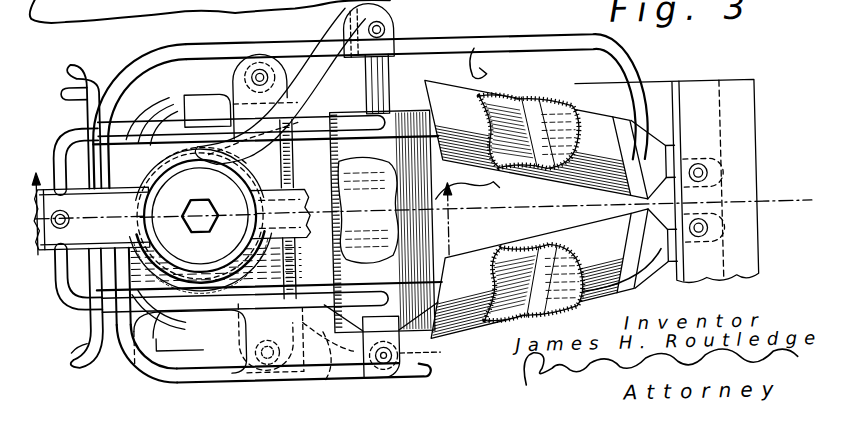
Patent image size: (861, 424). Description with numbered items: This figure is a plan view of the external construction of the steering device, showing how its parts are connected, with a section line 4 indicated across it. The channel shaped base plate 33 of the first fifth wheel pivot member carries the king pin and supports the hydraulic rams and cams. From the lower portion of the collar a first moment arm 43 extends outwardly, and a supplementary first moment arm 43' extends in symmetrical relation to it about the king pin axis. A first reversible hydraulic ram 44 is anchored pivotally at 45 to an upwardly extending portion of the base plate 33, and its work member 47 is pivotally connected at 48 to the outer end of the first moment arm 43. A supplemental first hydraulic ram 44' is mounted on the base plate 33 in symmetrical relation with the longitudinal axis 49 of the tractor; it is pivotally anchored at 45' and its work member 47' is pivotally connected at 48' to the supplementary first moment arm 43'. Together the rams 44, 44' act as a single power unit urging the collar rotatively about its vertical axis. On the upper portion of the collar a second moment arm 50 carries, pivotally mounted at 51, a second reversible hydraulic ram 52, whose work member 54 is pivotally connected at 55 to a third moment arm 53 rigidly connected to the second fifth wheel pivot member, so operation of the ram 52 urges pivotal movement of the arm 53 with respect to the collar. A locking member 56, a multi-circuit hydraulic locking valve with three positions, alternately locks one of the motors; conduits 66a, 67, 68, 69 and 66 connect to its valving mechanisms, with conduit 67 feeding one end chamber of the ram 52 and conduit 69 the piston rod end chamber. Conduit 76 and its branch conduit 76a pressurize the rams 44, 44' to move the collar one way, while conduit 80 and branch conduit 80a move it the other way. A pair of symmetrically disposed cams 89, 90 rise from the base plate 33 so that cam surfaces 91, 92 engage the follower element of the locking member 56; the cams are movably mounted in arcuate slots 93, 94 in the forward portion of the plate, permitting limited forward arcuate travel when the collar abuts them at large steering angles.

The section line 4- 4 is at (248, 219).
The base plate 33 is at (118, 335).
The first moment arm 43 is at (229, 322).
The supplementary first moment arm 43' is at (271, 105).
The first reversible hydraulic ram 44 is at (553, 273).
The supplemental first hydraulic ram 44' is at (550, 139).
The pivot anchor 45 is at (741, 226).
The pivot anchor 45' is at (740, 169).
The work member 47 is at (429, 371).
The work member 47' is at (424, 80).
The pivotal connection 48 is at (266, 359).
The pivotal connection 48' is at (265, 96).
The longitudinal axis 49 is at (780, 210).
The second moment arm 50 is at (364, 380).
The pivot mount 51 is at (429, 353).
The second reversible hydraulic ram 52 is at (376, 166).
The third moment arm 53 is at (342, 32).
The work member 54 is at (384, 74).
The pivotal connection 55 is at (392, 27).
The locking member 56 is at (173, 163).
The conduit 66 is at (80, 362).
The conduit 66a is at (219, 220).
The conduit 67 is at (60, 283).
The conduit 68 is at (88, 62).
The conduit 69 is at (62, 125).
The conduit 76 is at (205, 44).
The branch conduit 76a is at (490, 76).
The conduit 80 is at (690, 276).
The branch conduit 80a is at (500, 192).
The cam 89 is at (164, 105).
The cam 90 is at (175, 340).
The cam surface 91 is at (147, 108).
The cam surface 92 is at (158, 358).
The arcuate slot 93 is at (68, 345).
The arcuate slot 94 is at (64, 86).